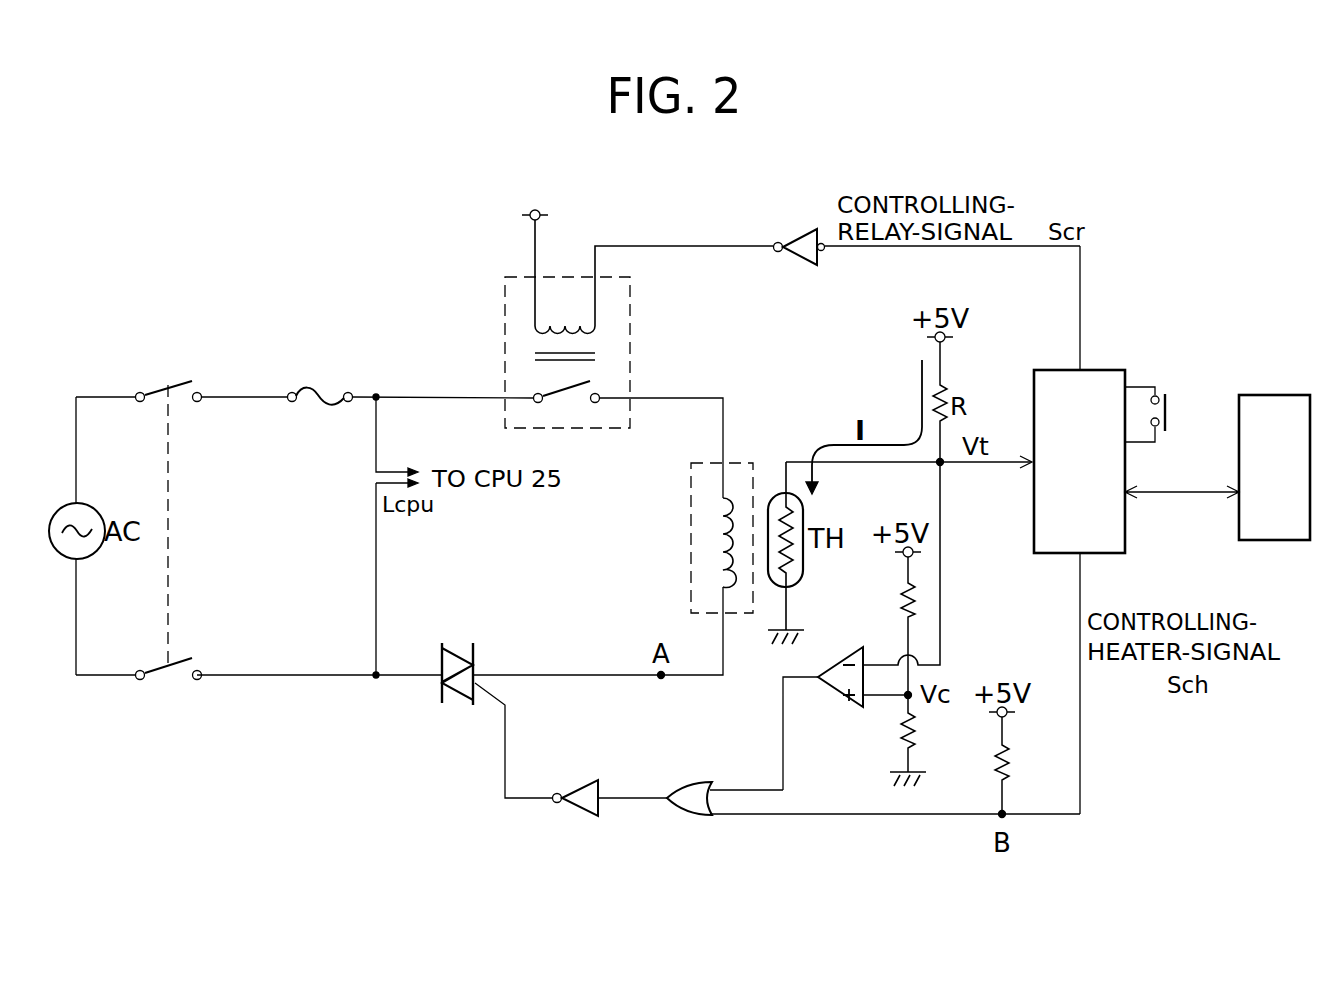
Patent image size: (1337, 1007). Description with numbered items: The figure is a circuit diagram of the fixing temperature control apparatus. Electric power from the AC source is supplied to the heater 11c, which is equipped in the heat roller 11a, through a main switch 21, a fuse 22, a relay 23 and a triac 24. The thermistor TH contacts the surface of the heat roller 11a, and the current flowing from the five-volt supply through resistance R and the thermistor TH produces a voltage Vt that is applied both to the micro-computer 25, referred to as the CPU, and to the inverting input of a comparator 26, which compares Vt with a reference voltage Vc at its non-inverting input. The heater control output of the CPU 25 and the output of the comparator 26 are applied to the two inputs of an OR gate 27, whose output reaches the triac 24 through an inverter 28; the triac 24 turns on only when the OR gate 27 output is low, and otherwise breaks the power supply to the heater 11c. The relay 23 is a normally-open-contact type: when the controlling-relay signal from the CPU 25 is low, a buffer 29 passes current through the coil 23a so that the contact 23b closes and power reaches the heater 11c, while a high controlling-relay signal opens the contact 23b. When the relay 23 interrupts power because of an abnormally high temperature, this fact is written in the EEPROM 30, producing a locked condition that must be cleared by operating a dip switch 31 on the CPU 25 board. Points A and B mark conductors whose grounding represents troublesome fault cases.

The heat roller 11a is at (690, 500).
The heater 11c is at (720, 558).
The main switch 21 is at (148, 391).
The fuse 22 is at (316, 390).
The relay 23 is at (505, 318).
The coil 23a is at (597, 312).
The normally-open contact 23b is at (572, 388).
The triac 24 is at (440, 690).
The micro-computer 25 is at (1106, 370).
The comparator 26 is at (846, 656).
The OR gate 27 is at (693, 783).
The inverter 28 is at (583, 780).
The buffer 29 is at (803, 230).
The EEPROM 30 is at (1286, 395).
The dip switch 31 is at (1165, 409).